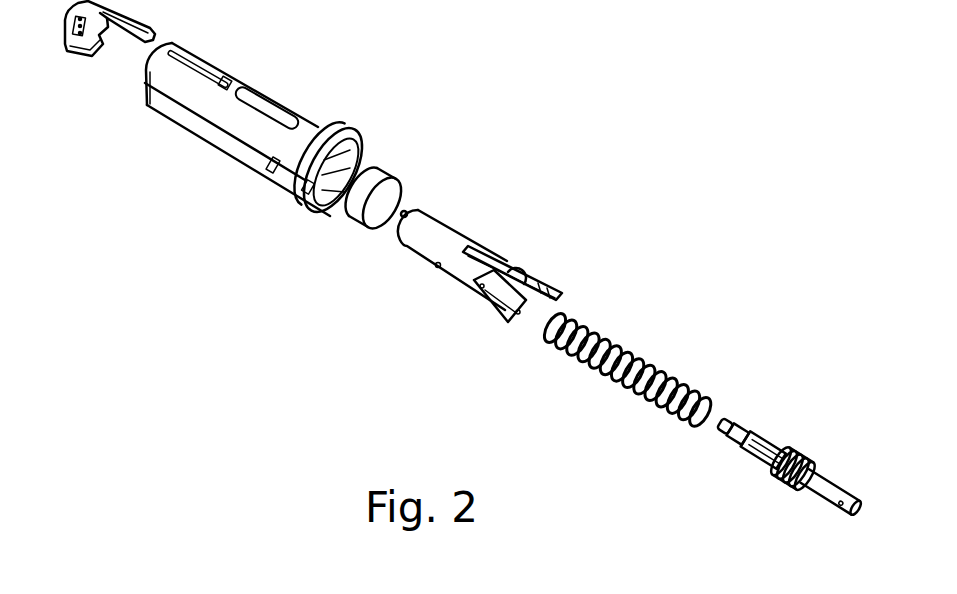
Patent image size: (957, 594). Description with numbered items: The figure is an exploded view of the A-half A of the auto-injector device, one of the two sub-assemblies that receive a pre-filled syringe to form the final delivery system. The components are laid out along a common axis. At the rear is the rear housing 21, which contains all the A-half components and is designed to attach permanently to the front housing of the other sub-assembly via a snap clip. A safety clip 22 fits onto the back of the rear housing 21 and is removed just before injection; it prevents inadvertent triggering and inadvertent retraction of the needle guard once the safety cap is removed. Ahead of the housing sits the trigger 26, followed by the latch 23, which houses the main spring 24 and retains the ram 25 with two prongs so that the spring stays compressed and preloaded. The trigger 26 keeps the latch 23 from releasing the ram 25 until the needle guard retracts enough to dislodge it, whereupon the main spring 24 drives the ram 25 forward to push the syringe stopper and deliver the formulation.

The rear housing 21 is at (156, 136).
The safety clip 22 is at (94, 66).
The latch 23 is at (451, 300).
The main spring 24 is at (594, 385).
The ram 25 is at (755, 480).
The trigger 26 is at (354, 241).
The A-half A is at (546, 157).